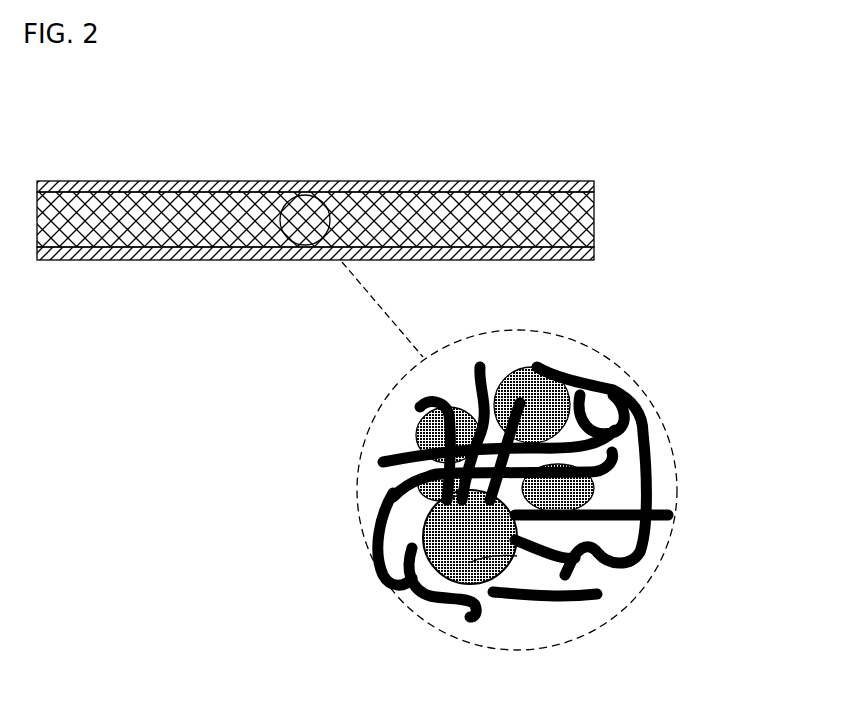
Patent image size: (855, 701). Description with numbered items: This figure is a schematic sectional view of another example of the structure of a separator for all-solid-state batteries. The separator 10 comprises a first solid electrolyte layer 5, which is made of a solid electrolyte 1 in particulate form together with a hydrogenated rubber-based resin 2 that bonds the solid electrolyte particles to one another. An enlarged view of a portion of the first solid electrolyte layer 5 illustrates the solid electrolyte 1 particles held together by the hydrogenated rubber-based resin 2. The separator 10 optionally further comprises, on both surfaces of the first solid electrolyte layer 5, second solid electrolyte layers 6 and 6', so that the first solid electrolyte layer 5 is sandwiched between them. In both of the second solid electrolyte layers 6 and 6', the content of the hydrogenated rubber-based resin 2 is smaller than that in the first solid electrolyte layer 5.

The separator for all-solid-state batteries 10 is at (387, 164).
The second solid electrolyte layer 6' is at (387, 188).
The first solid electrolyte layer 5 is at (594, 217).
The second solid electrolyte layer 6 is at (384, 257).
The hydrogenated rubber-based resin 2 is at (648, 467).
The solid electrolyte 1 is at (580, 570).